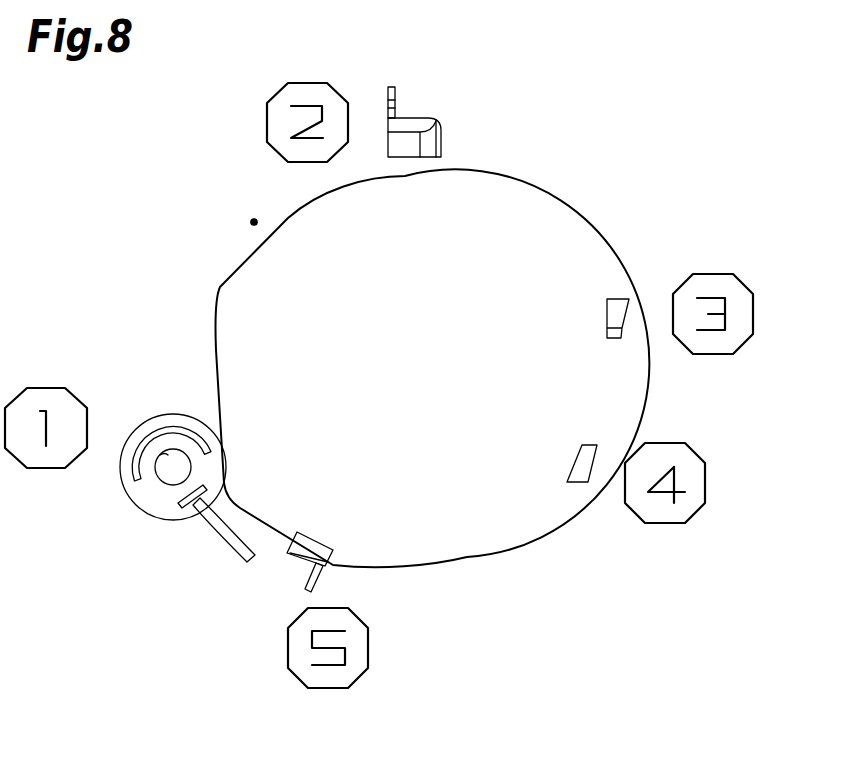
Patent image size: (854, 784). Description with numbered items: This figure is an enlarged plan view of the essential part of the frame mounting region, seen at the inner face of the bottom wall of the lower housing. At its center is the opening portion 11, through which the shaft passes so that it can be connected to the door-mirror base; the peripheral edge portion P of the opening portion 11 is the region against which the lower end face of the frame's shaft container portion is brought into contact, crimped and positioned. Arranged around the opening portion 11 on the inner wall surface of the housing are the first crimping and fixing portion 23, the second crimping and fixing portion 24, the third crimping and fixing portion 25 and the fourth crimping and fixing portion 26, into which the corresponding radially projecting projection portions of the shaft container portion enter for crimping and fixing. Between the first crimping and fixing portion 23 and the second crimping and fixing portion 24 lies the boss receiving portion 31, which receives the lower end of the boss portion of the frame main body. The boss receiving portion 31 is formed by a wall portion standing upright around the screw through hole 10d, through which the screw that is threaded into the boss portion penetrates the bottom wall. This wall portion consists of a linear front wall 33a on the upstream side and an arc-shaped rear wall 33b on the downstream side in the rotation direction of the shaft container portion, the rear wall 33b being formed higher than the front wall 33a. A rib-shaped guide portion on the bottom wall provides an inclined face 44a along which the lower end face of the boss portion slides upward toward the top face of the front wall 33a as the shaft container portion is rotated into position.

The opening portion 11 is at (510, 233).
The peripheral edge portion P is at (252, 220).
The first crimping and fixing portion 23 is at (443, 142).
The third crimping and fixing portion 25 is at (630, 316).
The fourth crimping and fixing portion 26 is at (597, 460).
The second crimping and fixing portion 24 is at (297, 564).
The boss receiving portion 31 is at (156, 490).
The screw through hole 10d is at (165, 455).
The rear wall 33b is at (150, 420).
The front wall 33a is at (182, 515).
The inclined face 44a is at (222, 543).